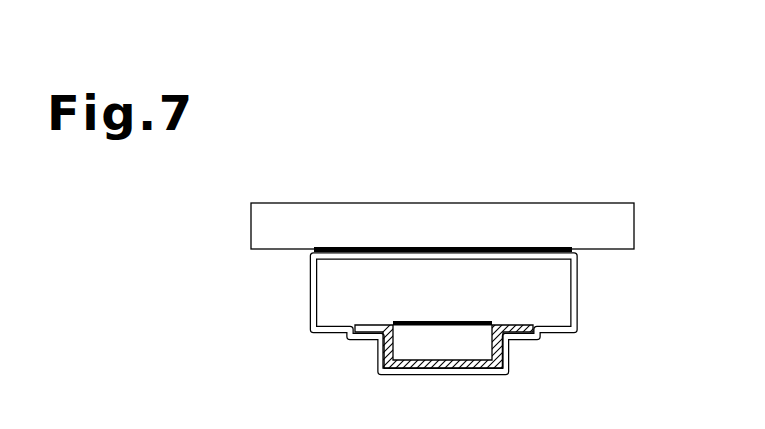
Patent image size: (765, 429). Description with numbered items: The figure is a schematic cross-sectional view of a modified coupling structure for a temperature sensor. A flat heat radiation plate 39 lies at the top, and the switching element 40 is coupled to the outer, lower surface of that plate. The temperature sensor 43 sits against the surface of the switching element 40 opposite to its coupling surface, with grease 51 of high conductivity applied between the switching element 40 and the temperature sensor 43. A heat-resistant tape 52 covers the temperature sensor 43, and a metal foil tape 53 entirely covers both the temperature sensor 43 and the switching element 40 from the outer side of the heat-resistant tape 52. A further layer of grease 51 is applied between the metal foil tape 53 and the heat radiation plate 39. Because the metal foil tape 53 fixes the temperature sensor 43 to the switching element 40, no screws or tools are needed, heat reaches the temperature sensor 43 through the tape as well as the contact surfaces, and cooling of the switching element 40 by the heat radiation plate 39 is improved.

The heat radiation plate 39 is at (636, 221).
The switching element 40 is at (562, 295).
The temperature sensor 43 is at (486, 347).
The grease 51 is at (316, 250).
The heat-resistant tape 52 is at (447, 375).
The metal foil tape 53 is at (378, 349).